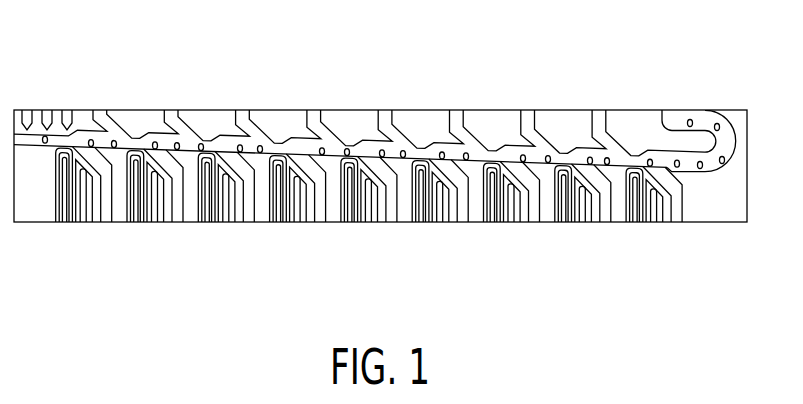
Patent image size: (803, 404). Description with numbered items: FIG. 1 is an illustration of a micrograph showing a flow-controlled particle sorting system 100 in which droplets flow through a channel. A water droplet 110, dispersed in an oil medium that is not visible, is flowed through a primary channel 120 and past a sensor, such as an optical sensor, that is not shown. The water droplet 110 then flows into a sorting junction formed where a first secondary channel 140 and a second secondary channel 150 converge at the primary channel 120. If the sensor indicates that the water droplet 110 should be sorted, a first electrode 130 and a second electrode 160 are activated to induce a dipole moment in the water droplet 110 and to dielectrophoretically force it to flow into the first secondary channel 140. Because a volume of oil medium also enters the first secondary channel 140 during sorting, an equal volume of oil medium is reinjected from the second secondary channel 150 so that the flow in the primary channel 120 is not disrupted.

The flow-controlled particle sorting system 100 is at (87, 71).
The water droplet 110 is at (256, 147).
The primary channel 120 is at (197, 149).
The first electrode 130 is at (369, 222).
The first secondary channel 140 is at (394, 218).
The second secondary channel 150 is at (384, 122).
The second electrode 160 is at (345, 222).